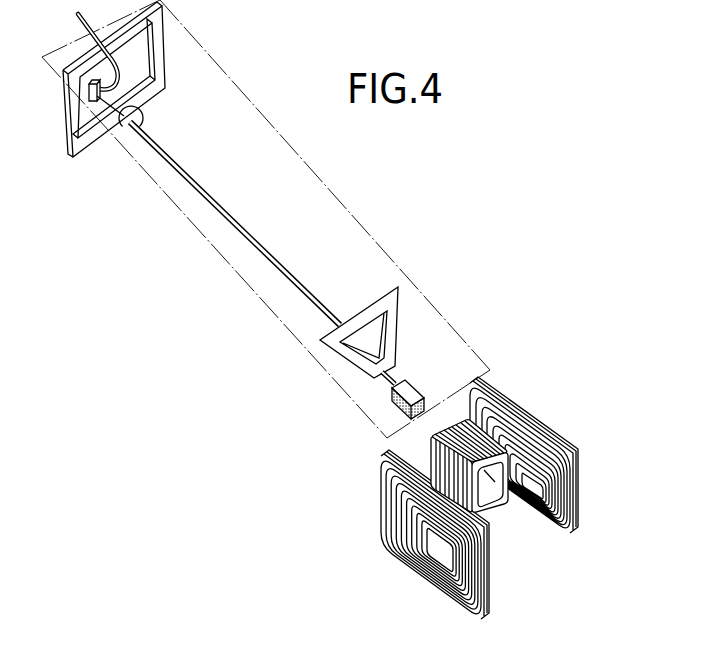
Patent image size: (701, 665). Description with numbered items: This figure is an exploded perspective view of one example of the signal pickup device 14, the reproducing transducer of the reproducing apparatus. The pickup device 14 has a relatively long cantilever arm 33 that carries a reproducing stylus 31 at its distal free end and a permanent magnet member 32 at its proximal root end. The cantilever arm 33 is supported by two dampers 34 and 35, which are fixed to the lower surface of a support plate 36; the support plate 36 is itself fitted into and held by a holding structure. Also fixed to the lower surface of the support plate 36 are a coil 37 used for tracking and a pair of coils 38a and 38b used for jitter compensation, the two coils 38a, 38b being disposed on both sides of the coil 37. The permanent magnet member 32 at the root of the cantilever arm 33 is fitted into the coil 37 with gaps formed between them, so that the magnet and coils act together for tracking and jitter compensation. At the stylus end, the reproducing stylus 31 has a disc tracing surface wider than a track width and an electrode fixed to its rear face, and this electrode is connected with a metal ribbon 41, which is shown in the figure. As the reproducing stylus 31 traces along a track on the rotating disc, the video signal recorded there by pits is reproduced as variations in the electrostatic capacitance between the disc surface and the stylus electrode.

The signal pickup device 14 is at (342, 160).
The reproducing stylus 31 is at (88, 87).
The permanent magnet member 32 is at (399, 410).
The cantilever arm 33 is at (225, 210).
The damper 34 is at (163, 61).
The damper 35 is at (366, 308).
The support plate 36 is at (353, 212).
The coil 37 is at (488, 497).
The coil 38a is at (390, 553).
The coil 38b is at (538, 428).
The metal ribbon 41 is at (78, 17).